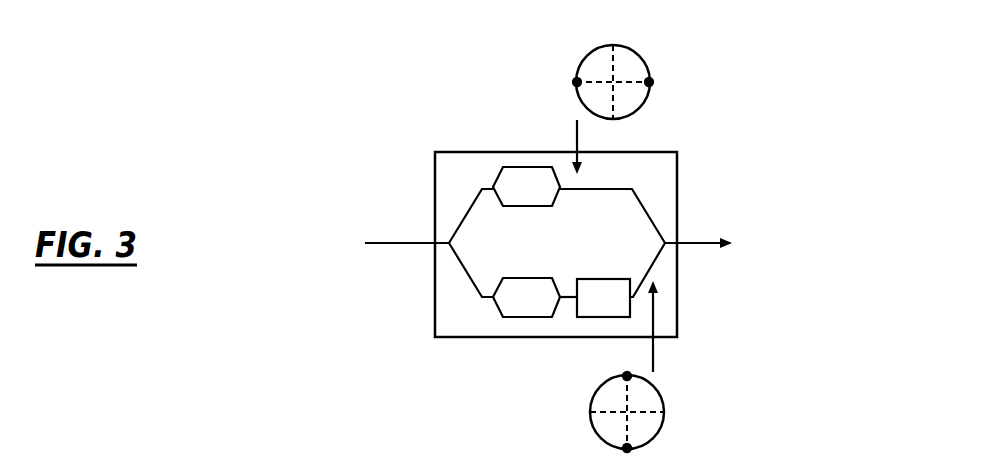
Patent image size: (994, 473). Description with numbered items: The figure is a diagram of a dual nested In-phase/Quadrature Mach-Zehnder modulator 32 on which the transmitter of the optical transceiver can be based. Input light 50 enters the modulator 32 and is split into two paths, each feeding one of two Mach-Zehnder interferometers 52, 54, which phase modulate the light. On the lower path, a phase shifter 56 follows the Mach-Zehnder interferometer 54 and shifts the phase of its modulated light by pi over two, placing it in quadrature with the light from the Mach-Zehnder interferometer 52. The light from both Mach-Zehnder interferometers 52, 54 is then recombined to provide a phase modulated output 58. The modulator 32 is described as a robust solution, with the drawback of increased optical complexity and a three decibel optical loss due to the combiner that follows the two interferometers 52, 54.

The dual nested I/Q Mach-Zehnder modulator 32 is at (745, 64).
The input light 50 is at (342, 205).
The Mach-Zehnder interferometer 52 is at (527, 167).
The Mach-Zehnder interferometer 54 is at (502, 314).
The phase shifter 56 is at (592, 320).
The phase modulated output 58 is at (709, 198).